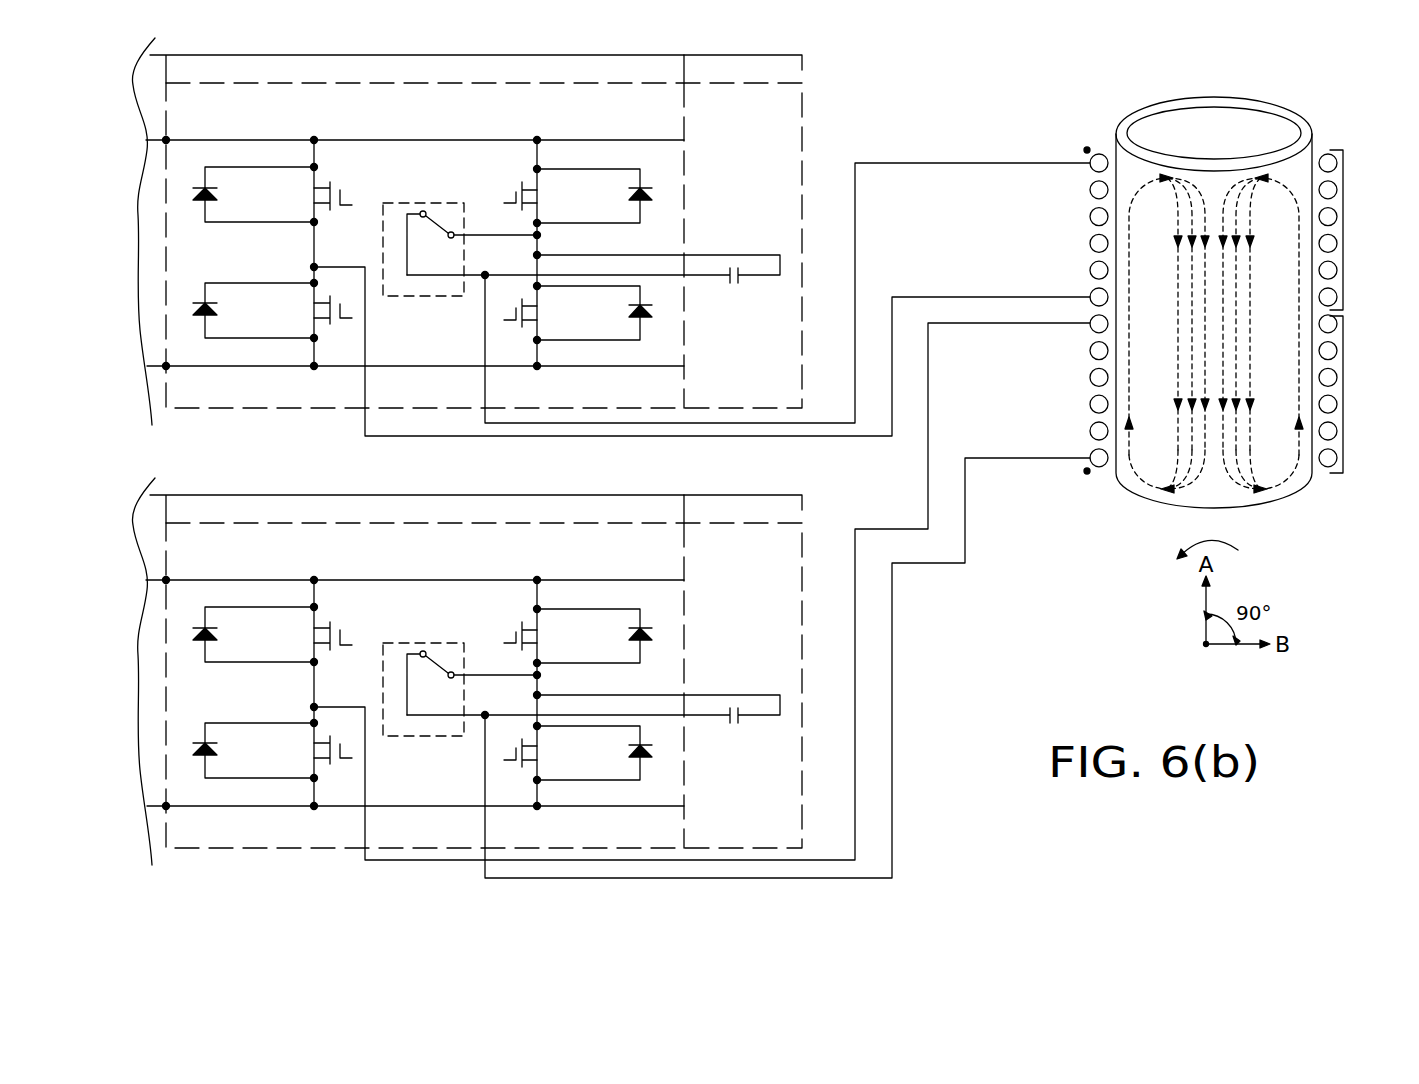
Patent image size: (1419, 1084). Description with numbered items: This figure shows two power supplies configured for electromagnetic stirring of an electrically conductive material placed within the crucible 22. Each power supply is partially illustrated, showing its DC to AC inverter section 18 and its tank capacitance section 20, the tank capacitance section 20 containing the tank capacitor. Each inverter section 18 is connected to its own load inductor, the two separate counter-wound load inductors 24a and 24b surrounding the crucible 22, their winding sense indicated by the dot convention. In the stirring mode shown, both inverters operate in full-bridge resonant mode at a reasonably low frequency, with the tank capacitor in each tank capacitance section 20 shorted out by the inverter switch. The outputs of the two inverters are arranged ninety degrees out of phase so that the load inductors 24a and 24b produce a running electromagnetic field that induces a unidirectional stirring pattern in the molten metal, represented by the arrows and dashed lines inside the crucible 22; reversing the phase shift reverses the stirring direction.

The DC to AC inverter section 18 is at (425, 55).
The tank capacitance section 20 is at (742, 55).
The crucible 22 is at (1266, 108).
The load inductor 24a is at (1343, 230).
The load inductor 24b is at (1343, 390).